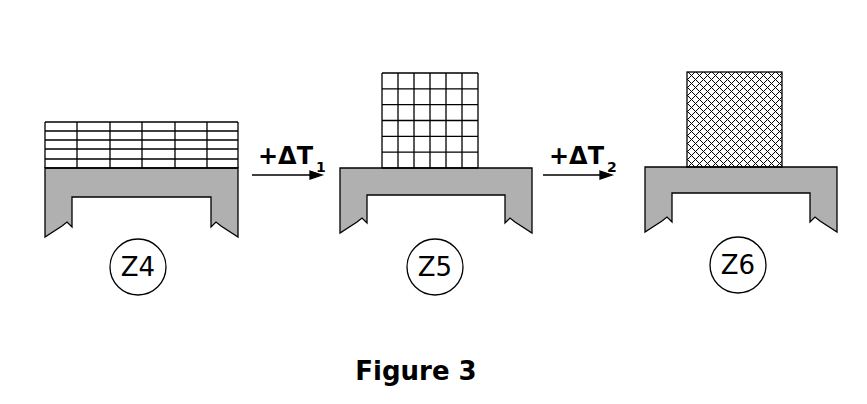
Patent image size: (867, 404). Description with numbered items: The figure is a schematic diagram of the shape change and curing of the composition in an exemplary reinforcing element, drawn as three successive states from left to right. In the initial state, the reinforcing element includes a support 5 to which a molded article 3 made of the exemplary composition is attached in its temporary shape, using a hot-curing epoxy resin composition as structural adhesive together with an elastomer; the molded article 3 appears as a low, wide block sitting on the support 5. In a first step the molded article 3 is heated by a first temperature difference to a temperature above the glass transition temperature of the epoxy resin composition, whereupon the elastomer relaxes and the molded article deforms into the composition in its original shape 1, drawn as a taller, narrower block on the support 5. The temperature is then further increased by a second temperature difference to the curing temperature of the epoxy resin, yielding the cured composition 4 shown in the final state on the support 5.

The composition in the original shape 1 is at (420, 92).
The molded article 3 is at (123, 132).
The cured composition 4 is at (733, 88).
The support 5 is at (158, 188).